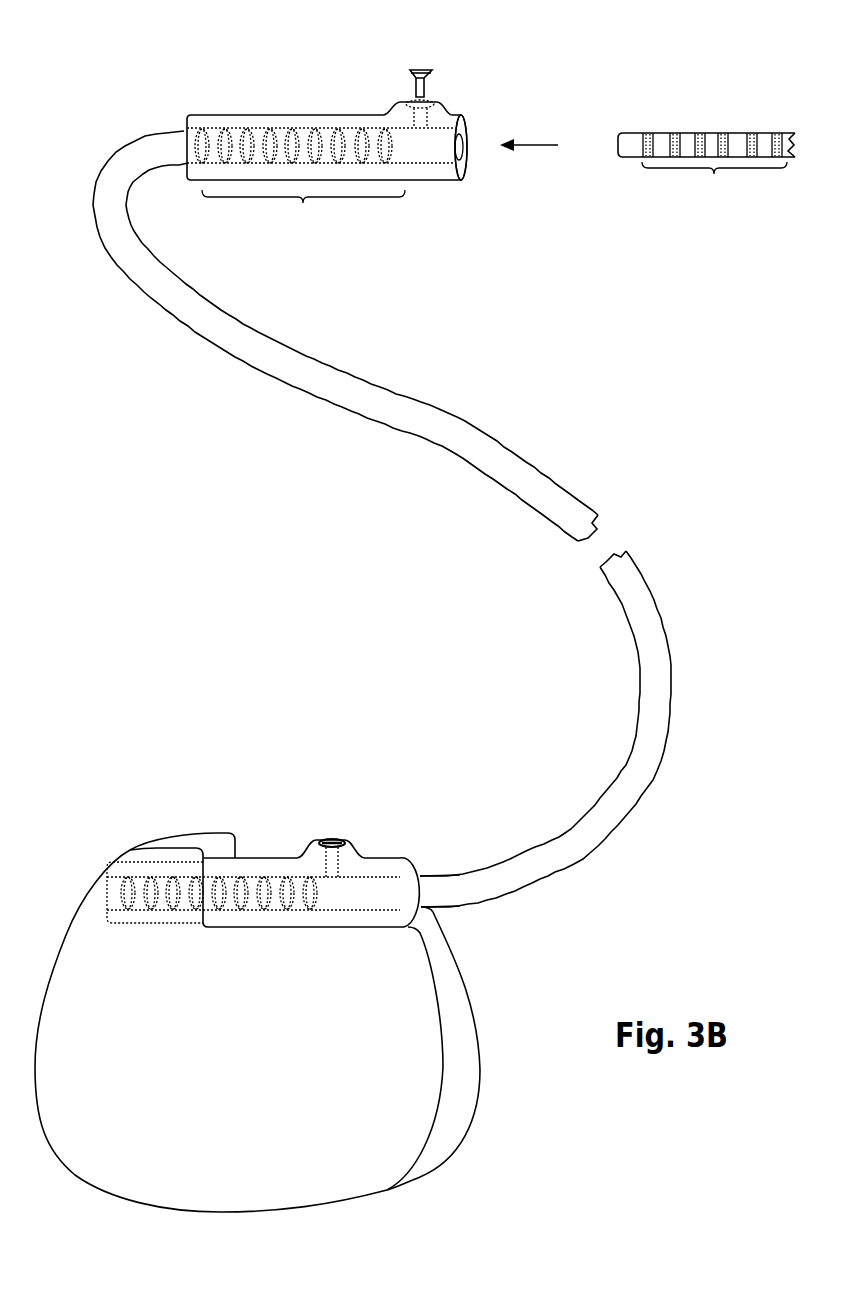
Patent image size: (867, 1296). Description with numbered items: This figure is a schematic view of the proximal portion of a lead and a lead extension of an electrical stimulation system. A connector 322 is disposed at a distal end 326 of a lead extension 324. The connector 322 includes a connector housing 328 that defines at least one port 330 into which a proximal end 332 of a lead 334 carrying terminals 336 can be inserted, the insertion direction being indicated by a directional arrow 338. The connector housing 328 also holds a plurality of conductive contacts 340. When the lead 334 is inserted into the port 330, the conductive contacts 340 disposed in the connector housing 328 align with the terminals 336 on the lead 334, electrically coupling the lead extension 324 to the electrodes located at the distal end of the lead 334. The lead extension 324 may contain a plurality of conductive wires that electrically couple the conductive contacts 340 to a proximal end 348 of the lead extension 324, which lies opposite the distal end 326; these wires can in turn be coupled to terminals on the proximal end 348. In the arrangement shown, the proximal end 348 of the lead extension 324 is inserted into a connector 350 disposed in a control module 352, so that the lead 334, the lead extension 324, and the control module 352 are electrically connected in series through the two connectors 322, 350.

The connector 322 is at (288, 112).
The lead extension 324 is at (410, 398).
The distal end 326 is at (331, 124).
The connector housing 328 is at (232, 122).
The port 330 is at (481, 168).
The proximal end 332 is at (706, 109).
The lead 334 is at (708, 133).
The terminals 336 is at (714, 183).
The directional arrow 338 is at (541, 144).
The conductive contacts 340 is at (303, 214).
The proximal end 348 is at (449, 850).
The connector 350 is at (262, 857).
The control module 352 is at (84, 836).